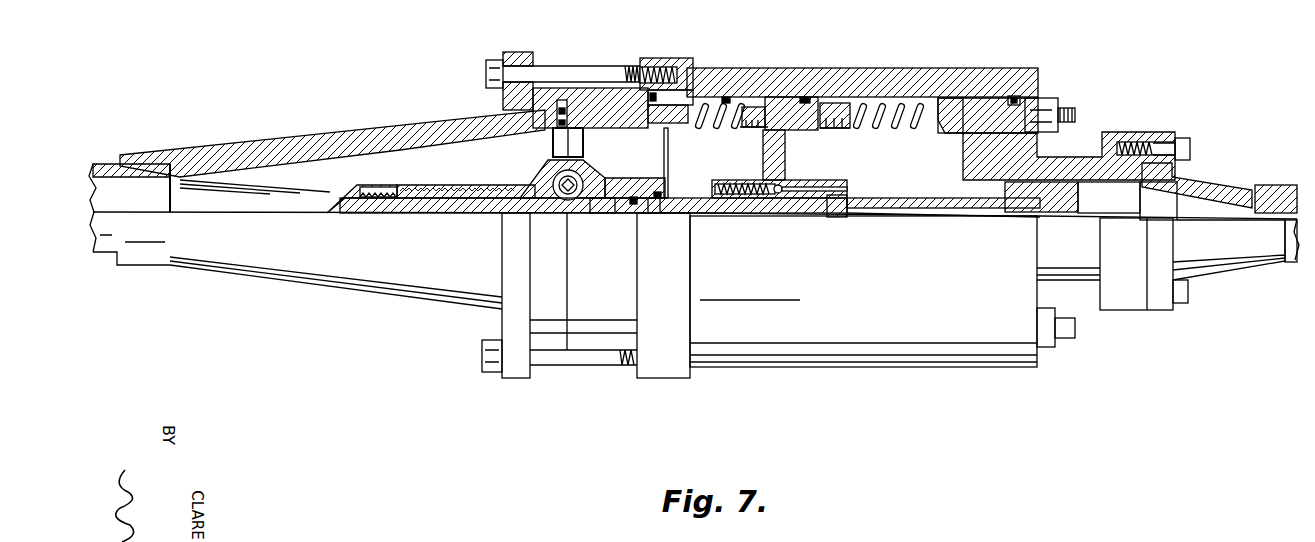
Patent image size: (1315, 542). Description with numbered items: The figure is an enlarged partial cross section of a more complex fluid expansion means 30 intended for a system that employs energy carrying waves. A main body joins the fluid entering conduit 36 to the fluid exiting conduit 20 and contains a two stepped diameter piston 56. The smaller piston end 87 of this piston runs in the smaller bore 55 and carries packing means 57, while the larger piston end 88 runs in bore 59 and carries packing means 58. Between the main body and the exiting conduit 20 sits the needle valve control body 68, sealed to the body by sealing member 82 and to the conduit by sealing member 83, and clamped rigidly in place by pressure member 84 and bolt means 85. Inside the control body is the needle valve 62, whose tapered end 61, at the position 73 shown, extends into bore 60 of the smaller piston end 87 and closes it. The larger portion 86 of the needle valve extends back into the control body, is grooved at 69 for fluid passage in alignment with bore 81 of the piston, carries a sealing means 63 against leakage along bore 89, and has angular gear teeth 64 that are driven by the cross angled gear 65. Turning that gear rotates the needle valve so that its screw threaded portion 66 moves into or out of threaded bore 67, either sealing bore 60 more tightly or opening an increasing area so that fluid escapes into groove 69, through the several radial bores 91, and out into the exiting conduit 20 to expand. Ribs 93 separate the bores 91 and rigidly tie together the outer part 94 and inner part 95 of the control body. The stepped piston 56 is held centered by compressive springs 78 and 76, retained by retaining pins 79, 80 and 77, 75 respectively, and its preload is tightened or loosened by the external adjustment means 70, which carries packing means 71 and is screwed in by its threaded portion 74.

The fluid exiting conduit 20 is at (288, 165).
The fluid expansion means 30 is at (860, 384).
The fluid entering conduit 36 is at (1200, 190).
The smaller bore 55 is at (1108, 180).
The two stepped diameter piston 56 is at (785, 151).
The packing means 57 is at (1060, 160).
The packing means 58 is at (806, 97).
The bore 59 is at (718, 68).
The bore 60 is at (1077, 203).
The tapered end 61 is at (860, 213).
The needle valve 62 is at (797, 207).
The sealing means 63 is at (633, 205).
The angular gear teeth 64 is at (602, 206).
The cross angled gear 65 is at (548, 180).
The screw threaded portion 66 is at (472, 195).
The threaded bore 67 is at (395, 192).
The needle valve control body 68 is at (636, 188).
The groove 69 is at (705, 205).
The external adjustment means 70 is at (1050, 104).
The packing means 71 is at (1013, 96).
The position 73 is at (832, 217).
The threaded portion 74 is at (953, 100).
The retaining pin 75 is at (931, 104).
The compressive spring 76 is at (892, 130).
The retaining pin 77 is at (845, 129).
The compressive spring 78 is at (727, 97).
The retaining pin 79 is at (689, 90).
The retaining pin 80 is at (747, 128).
The bore 81 is at (795, 198).
The sealing member 82 is at (662, 58).
The sealing member 83 is at (566, 100).
The pressure member 84 is at (516, 52).
The bolt means 85 is at (490, 60).
The larger portion 86 is at (655, 205).
The smaller piston end 87 is at (1050, 213).
The larger piston end 88 is at (777, 97).
The bore 89 is at (675, 197).
The bores 91 is at (553, 146).
The ribs 93 is at (584, 147).
The outer part 94 is at (622, 92).
The inner part 95 is at (657, 192).